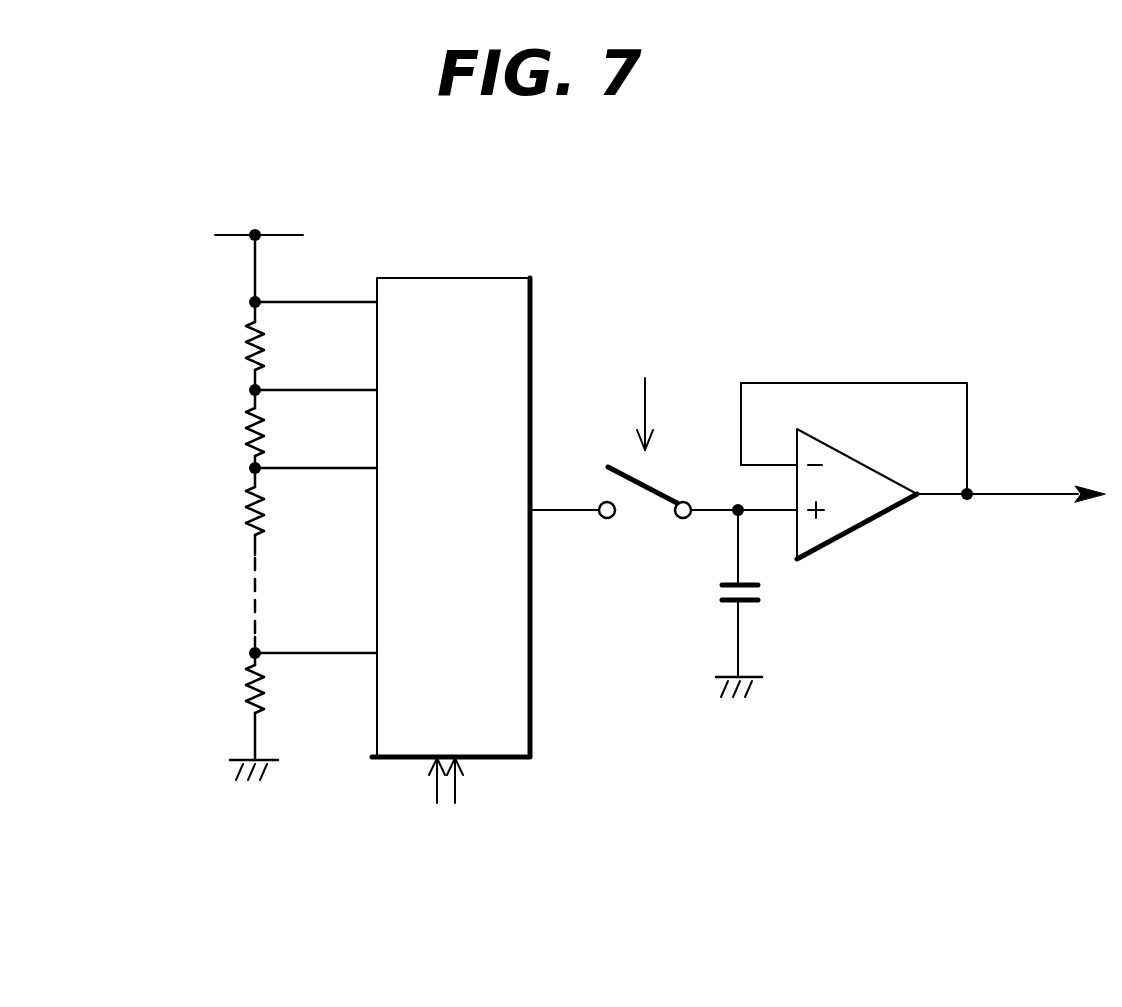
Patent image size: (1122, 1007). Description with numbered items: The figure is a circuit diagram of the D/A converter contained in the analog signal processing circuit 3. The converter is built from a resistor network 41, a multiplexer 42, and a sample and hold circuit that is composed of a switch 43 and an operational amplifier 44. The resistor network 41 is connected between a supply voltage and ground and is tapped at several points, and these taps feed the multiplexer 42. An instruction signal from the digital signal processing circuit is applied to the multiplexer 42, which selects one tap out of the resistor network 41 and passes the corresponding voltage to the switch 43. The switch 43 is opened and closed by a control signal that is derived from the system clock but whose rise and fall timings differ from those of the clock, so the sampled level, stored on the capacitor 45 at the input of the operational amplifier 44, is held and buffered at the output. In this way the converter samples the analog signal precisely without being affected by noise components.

The analog signal processing circuit 3 is at (850, 192).
The resistor network 41 is at (197, 465).
The multiplexer 42 is at (445, 278).
The switch 43 is at (643, 538).
The operational amplifier 44 is at (877, 523).
The capacitor 45 is at (768, 599).